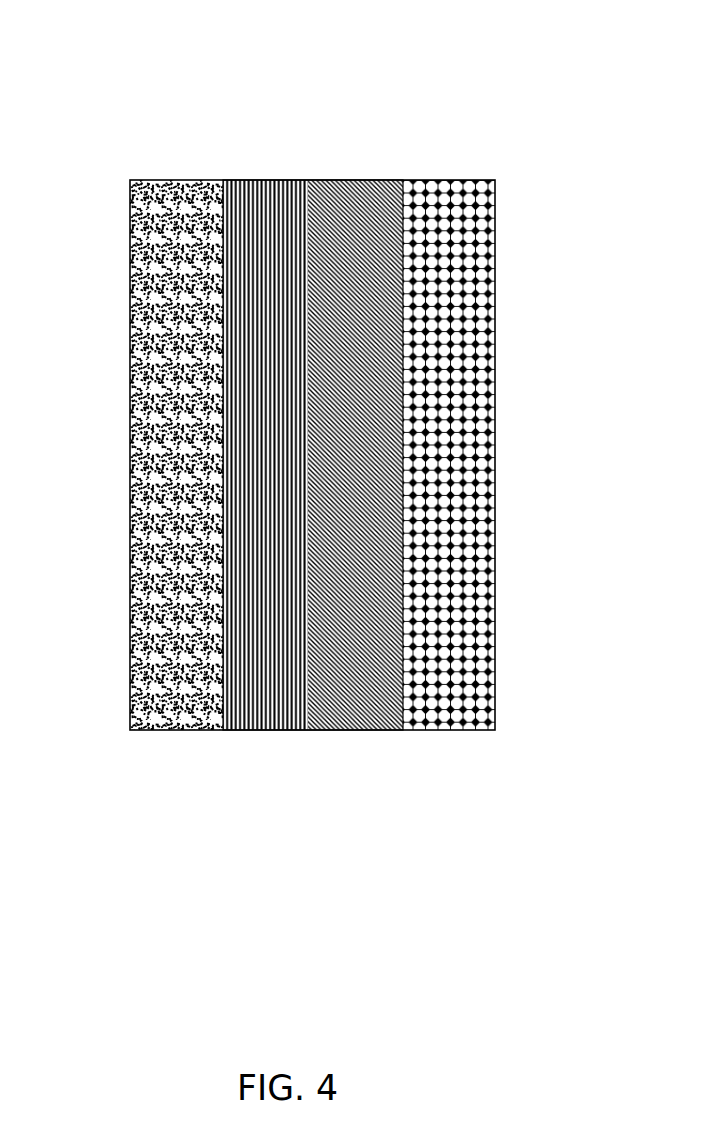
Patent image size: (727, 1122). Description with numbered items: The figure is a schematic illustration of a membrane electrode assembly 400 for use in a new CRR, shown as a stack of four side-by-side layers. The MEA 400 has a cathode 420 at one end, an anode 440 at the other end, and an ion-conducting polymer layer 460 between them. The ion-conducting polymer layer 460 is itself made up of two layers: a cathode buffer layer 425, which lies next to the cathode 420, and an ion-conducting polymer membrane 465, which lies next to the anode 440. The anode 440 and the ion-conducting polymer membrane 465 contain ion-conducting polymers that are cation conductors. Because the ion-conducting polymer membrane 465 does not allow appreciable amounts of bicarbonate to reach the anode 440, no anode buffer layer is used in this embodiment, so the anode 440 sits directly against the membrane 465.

The membrane electrode assembly 400 is at (152, 178).
The ion-conducting polymer layer 460 is at (403, 178).
The cathode 420 is at (203, 660).
The cathode buffer layer 425 is at (293, 650).
The ion-conducting polymer membrane 465 is at (372, 650).
The anode 440 is at (455, 652).